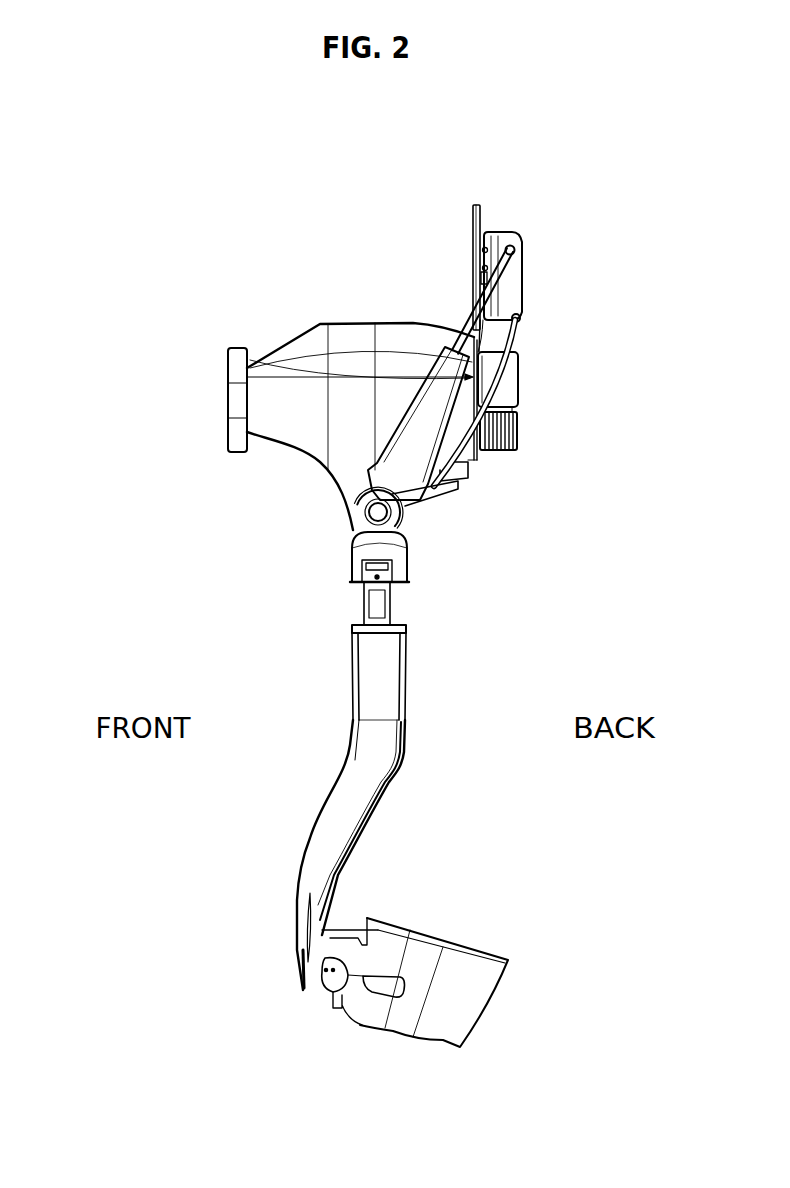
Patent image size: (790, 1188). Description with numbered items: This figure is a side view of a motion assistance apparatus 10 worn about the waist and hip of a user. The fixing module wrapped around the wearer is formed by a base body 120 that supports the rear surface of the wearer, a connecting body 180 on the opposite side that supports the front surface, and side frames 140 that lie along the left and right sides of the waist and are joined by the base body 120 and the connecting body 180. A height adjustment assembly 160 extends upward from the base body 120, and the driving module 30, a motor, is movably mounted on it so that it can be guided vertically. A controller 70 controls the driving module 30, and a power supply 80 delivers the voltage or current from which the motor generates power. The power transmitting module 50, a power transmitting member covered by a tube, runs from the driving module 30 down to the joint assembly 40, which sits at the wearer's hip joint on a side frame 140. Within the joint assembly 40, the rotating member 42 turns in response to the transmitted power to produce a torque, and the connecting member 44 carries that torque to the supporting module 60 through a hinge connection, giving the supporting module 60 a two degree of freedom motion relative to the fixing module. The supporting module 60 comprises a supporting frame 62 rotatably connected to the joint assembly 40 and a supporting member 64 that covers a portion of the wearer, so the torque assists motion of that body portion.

The motion assistance apparatus 10 is at (376, 148).
The driving module 30 is at (522, 270).
The joint assembly 40 is at (272, 658).
The rotating member 42 is at (358, 552).
The connecting member 44 is at (372, 607).
The power transmitting module 50 is at (470, 320).
The supporting module 60 is at (508, 888).
The supporting frame 62 is at (368, 798).
The supporting member 64 is at (425, 953).
The controller 70 is at (518, 386).
The power supply 80 is at (517, 430).
The base body 120 is at (455, 468).
The side frames 140 is at (305, 440).
The height adjustment assembly 160 is at (473, 222).
The connecting body 180 is at (233, 398).